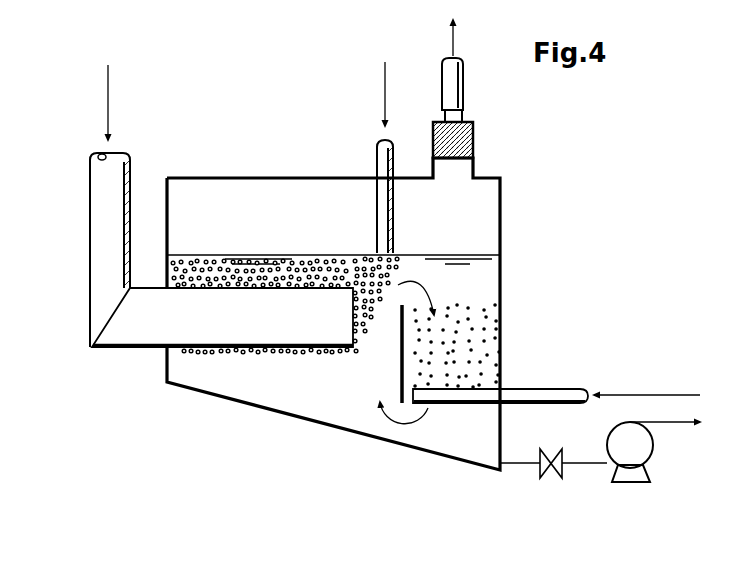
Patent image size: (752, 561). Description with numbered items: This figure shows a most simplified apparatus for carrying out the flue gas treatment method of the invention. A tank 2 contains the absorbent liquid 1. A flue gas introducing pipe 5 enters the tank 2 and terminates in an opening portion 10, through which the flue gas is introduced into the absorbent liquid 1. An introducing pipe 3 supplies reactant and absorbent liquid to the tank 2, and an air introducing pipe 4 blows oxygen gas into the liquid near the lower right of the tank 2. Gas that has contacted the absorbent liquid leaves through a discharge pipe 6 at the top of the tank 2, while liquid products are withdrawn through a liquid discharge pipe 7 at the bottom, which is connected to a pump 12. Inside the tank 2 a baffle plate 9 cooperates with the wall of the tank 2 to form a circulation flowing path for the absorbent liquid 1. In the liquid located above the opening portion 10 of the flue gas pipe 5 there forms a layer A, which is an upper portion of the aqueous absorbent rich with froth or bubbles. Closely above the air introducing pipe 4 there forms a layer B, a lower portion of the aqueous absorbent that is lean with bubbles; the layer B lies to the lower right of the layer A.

The absorbent liquid 1 is at (345, 389).
The tank 2 is at (500, 218).
The introducing pipe 3 is at (377, 155).
The air introducing pipe 4 is at (560, 388).
The flue gas introducing pipe 5 is at (90, 214).
The discharge pipe 6 is at (465, 78).
The liquid discharge pipe 7 is at (522, 467).
The baffle plate 9 is at (400, 363).
The opening portion 10 is at (248, 348).
The pump 12 is at (607, 437).
The layer A is at (313, 273).
The layer B is at (465, 328).